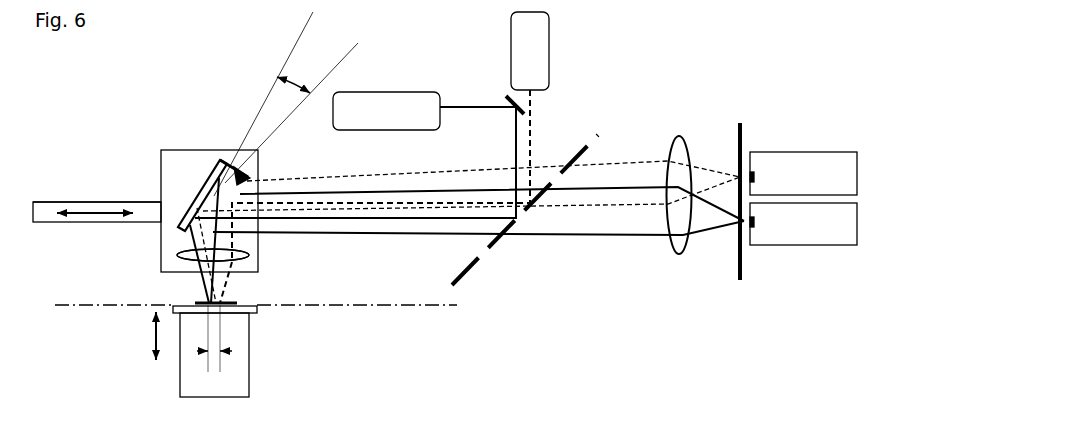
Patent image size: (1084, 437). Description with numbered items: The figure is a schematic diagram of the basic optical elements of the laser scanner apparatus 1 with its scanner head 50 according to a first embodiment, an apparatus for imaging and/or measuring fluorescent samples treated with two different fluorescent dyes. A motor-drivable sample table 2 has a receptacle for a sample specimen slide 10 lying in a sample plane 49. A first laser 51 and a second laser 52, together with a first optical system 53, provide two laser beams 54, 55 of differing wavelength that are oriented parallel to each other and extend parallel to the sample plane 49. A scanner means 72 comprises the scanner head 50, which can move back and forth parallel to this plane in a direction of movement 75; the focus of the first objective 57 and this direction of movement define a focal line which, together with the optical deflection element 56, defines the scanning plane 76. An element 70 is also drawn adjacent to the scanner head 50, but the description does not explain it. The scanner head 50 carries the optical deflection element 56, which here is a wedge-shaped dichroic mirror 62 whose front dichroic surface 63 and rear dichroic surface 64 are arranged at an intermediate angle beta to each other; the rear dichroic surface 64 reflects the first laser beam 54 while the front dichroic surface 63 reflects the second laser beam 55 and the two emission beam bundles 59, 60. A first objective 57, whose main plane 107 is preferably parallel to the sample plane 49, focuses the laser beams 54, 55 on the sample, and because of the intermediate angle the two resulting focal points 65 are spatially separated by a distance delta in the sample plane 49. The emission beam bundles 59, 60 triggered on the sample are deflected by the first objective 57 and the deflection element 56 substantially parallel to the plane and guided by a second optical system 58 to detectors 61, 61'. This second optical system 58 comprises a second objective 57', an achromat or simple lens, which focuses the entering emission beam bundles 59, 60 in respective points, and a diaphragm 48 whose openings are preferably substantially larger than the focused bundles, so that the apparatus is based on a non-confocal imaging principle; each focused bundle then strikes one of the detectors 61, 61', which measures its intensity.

The laser scanner apparatus 1 is at (87, 102).
The sample table 2 is at (214, 351).
The sample specimen slide 10 is at (253, 312).
The diaphragm 48 is at (738, 260).
The sample plane 49 is at (392, 302).
The scanner head 50 is at (209, 211).
The first laser 51 is at (530, 51).
The second laser 52 is at (386, 111).
The first optical system 53 is at (569, 98).
The first laser beam 54 is at (225, 298).
The second laser beam 55 is at (206, 279).
The optical deflection element 56 is at (228, 173).
The first objective 57 is at (137, 274).
The second objective 57' is at (651, 217).
The second optical system 58 is at (738, 125).
The emission beam bundle 59 is at (247, 243).
The emission beam bundle 60 is at (175, 242).
The detector 61 is at (803, 173).
The detector 61' is at (803, 223).
The wedge-shaped dichroic mirror 62 is at (222, 182).
The front dichroic surface 63 is at (281, 154).
The rear dichroic surface 64 is at (203, 175).
The focal point 65 is at (195, 302).
The arm 70 is at (50, 216).
The scanner means 72 is at (90, 320).
The direction of movement 75 is at (97, 212).
The scanning plane 76 is at (97, 166).
The main plane 107 is at (178, 255).